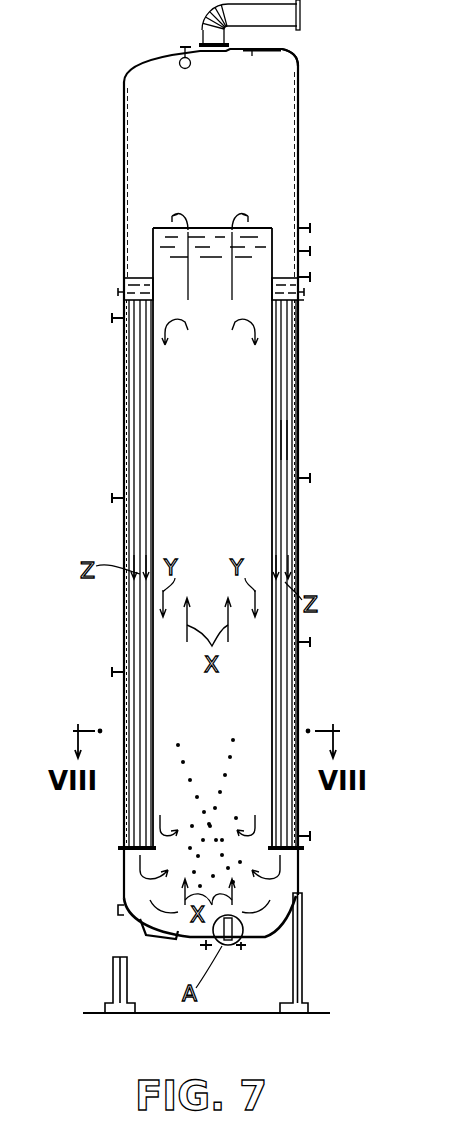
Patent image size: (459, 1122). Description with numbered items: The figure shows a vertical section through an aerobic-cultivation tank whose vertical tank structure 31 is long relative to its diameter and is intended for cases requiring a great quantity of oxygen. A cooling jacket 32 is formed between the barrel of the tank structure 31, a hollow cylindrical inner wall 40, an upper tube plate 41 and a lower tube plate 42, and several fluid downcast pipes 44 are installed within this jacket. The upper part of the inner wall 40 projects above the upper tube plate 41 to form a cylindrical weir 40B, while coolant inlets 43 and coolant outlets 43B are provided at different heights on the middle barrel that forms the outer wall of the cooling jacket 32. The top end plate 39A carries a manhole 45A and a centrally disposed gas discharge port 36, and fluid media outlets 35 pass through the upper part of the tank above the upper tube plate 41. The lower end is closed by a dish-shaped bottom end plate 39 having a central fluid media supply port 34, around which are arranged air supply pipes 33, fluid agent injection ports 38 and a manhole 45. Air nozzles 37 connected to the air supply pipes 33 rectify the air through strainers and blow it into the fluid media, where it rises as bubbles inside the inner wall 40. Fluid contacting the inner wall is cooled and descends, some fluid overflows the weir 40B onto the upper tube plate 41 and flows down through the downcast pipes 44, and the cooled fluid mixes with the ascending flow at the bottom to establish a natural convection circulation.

The vertical tank structure 31 is at (300, 195).
The cooling jacket 32 is at (298, 388).
The air supply pipes 33 is at (229, 946).
The fluid media supply port 34 is at (205, 946).
The fluid media outlets 35 is at (312, 277).
The gas discharge port 36 is at (196, 48).
The air nozzles 37 is at (242, 946).
The fluid agent injection ports 38 is at (244, 930).
The bottom end plate 39 is at (300, 893).
The top end plate 39A is at (300, 67).
The hollow cylindrical inner wall 40 is at (155, 717).
The cylindrical weir 40B is at (262, 234).
The upper tube plate 41 is at (303, 300).
The lower tube plate 42 is at (304, 848).
The coolant inlets 43 is at (311, 479).
The coolant outlets 43B is at (113, 320).
The fluid downcast pipes 44 is at (288, 444).
The manhole 45 is at (152, 936).
The manhole 45A is at (266, 48).